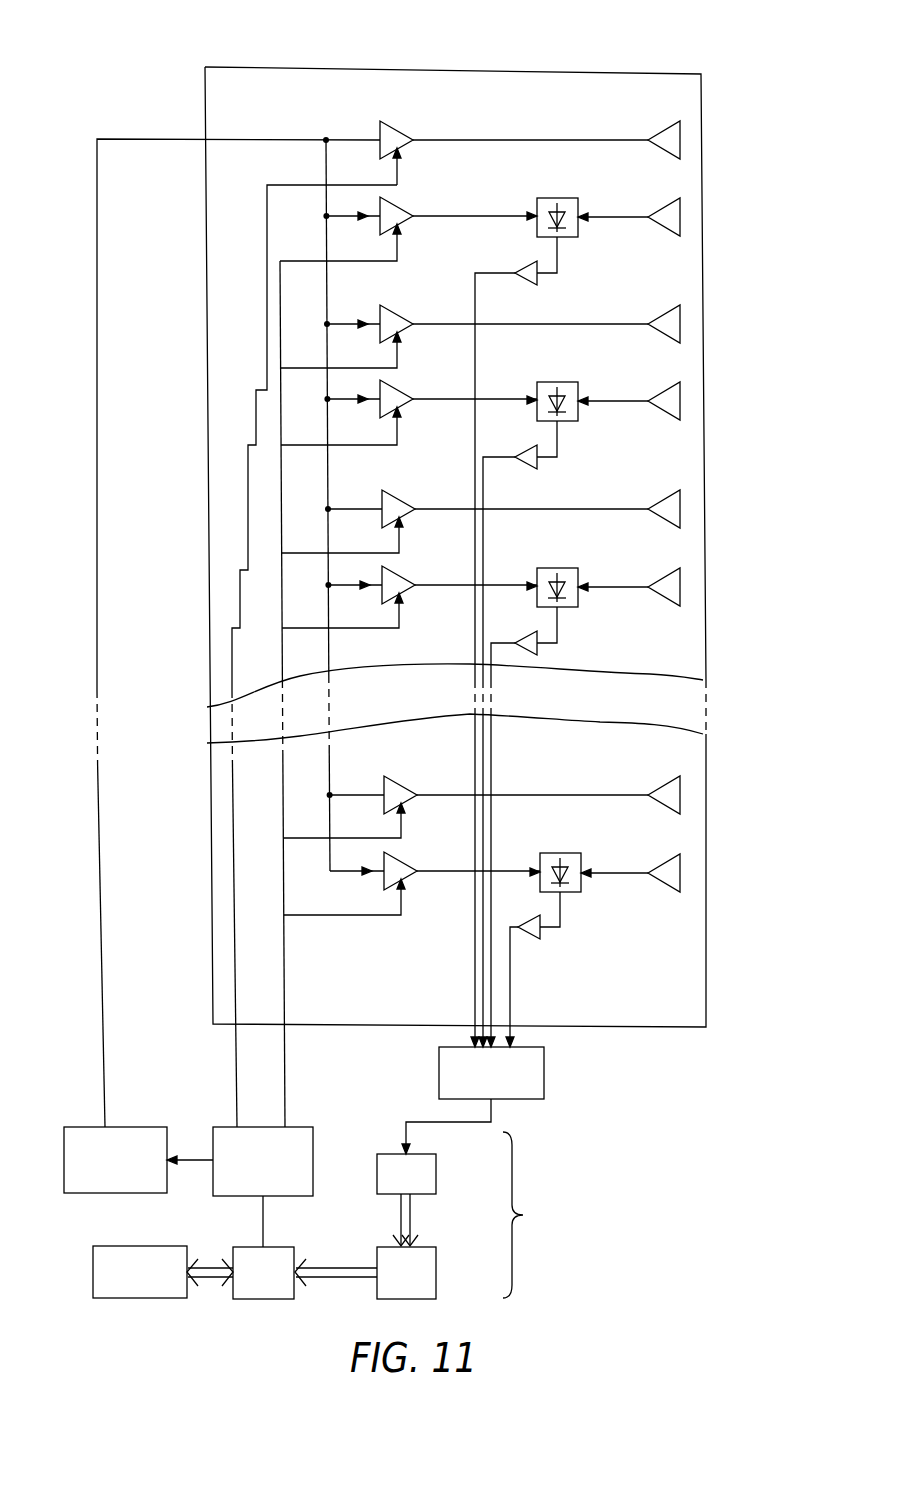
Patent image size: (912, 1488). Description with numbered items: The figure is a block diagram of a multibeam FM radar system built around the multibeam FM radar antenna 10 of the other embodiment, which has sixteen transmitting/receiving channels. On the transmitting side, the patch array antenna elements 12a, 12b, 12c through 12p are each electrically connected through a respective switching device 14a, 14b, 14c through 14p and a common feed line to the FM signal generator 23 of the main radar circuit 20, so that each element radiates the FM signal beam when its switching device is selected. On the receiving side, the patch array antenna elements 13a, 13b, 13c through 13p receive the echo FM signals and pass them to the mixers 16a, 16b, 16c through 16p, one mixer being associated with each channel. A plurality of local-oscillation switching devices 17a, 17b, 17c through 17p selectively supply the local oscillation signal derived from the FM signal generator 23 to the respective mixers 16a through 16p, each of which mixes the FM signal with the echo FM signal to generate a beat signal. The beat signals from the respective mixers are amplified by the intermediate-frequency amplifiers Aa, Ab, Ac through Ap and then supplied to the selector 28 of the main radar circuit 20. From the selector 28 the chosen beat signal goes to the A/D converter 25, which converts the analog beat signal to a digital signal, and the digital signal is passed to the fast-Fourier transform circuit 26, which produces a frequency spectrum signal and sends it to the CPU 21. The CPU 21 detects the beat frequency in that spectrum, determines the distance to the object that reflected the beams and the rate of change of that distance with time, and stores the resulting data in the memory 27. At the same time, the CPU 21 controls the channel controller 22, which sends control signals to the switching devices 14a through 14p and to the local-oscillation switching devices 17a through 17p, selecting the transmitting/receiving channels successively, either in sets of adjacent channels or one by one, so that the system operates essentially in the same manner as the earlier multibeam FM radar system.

The multibeam FM radar antenna 10 is at (366, 45).
The patch array antenna element 12a is at (667, 143).
The patch array antenna element 12b is at (667, 327).
The patch array antenna element 12c is at (667, 512).
The patch array antenna element 12p is at (667, 798).
The patch array antenna element 13a is at (667, 220).
The patch array antenna element 13b is at (667, 404).
The patch array antenna element 13c is at (667, 590).
The patch array antenna element 13p is at (667, 875).
The switching device 14a is at (398, 128).
The switching device 14b is at (398, 312).
The switching device 14c is at (400, 497).
The switching device 14p is at (402, 783).
The mixer 16a is at (578, 205).
The mixer 16b is at (578, 389).
The mixer 16c is at (578, 575).
The mixer 16p is at (581, 860).
The local-oscillation switching device 17a is at (398, 204).
The local-oscillation switching device 17b is at (398, 387).
The local-oscillation switching device 17c is at (400, 573).
The local-oscillation switching device 17p is at (402, 859).
The intermediate-frequency amplifier Aa is at (527, 266).
The intermediate-frequency amplifier Ab is at (528, 450).
The intermediate-frequency amplifier Ac is at (530, 636).
The intermediate-frequency amplifier Ap is at (534, 912).
The main radar circuit 20 is at (531, 1215).
The CPU 21 is at (285, 1247).
The channel controller 22 is at (222, 1127).
The FM signal generator 23 is at (75, 1127).
The A/D converter 25 is at (390, 1154).
The fast-Fourier transform circuit 26 is at (430, 1247).
The memory 27 is at (93, 1272).
The selector 28 is at (546, 1086).